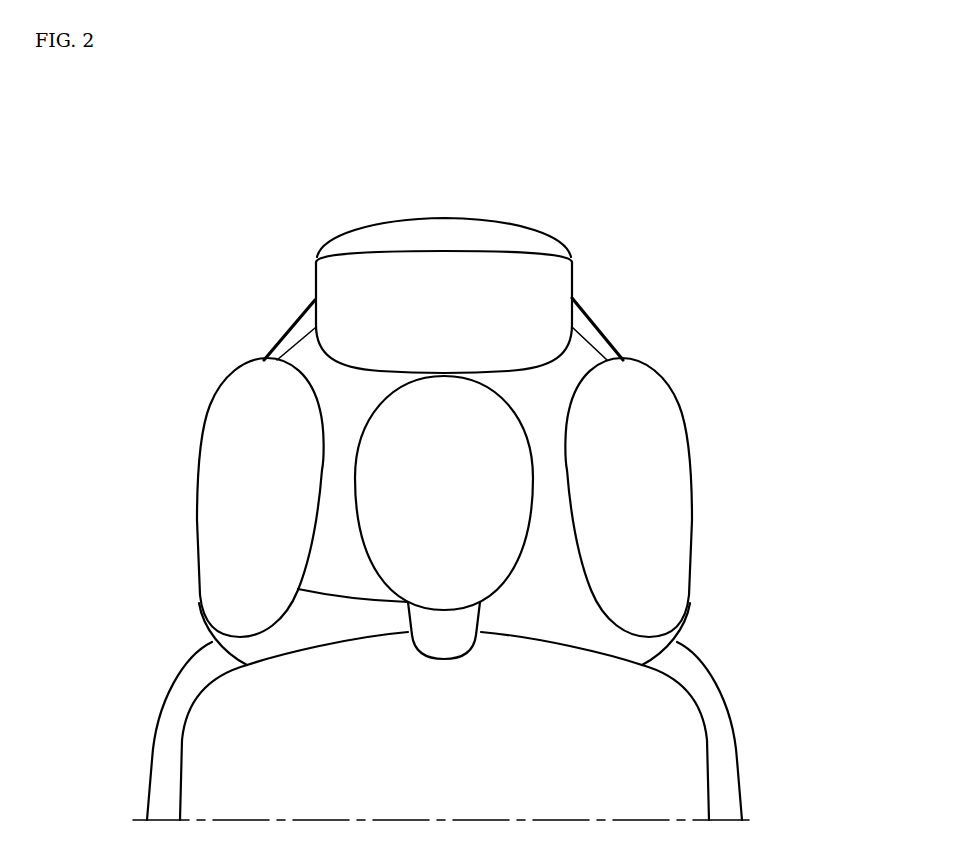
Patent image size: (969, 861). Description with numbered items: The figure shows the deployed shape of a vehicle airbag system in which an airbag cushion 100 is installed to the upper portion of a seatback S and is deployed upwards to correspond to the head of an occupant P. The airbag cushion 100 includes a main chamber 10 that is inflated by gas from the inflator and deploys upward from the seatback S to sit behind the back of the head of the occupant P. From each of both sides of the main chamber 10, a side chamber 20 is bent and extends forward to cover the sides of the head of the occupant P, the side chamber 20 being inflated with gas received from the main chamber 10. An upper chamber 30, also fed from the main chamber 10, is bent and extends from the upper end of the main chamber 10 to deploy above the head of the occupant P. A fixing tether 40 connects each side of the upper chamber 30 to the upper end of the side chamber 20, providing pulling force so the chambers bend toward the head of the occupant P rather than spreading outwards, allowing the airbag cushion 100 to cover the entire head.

The airbag cushion 100 is at (278, 244).
The main chamber 10 is at (347, 415).
The side chamber 20 is at (213, 483).
The upper chamber 30 is at (437, 237).
The fixing tether 40 is at (595, 333).
The occupant P is at (498, 453).
The seatback S is at (758, 766).